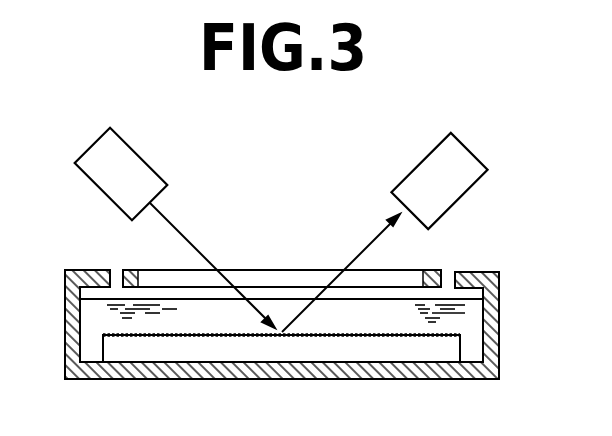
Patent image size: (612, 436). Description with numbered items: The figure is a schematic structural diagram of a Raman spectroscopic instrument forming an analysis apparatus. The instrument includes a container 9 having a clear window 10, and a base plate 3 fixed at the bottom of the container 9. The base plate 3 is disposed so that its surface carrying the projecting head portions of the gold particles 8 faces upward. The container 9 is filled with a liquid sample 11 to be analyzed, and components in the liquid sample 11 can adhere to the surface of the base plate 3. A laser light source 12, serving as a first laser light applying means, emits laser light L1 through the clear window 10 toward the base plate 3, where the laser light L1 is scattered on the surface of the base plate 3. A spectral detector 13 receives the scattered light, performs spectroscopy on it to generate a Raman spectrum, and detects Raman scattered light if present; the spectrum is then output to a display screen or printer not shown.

The base plate 3 is at (462, 352).
The gold particles 8 is at (103, 334).
The container 9 is at (496, 272).
The clear window 10 is at (275, 273).
The liquid sample 11 is at (462, 320).
The laser light source 12 is at (144, 155).
The spectral detector 13 is at (476, 153).
The laser light L1 is at (187, 233).